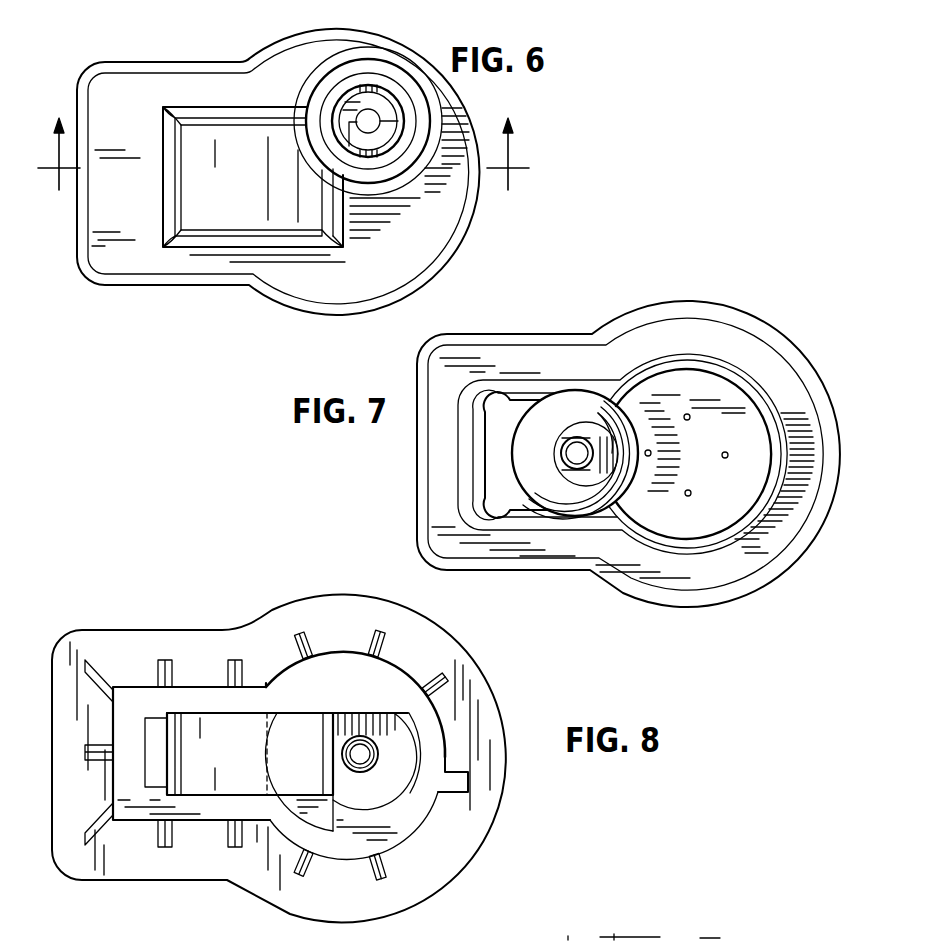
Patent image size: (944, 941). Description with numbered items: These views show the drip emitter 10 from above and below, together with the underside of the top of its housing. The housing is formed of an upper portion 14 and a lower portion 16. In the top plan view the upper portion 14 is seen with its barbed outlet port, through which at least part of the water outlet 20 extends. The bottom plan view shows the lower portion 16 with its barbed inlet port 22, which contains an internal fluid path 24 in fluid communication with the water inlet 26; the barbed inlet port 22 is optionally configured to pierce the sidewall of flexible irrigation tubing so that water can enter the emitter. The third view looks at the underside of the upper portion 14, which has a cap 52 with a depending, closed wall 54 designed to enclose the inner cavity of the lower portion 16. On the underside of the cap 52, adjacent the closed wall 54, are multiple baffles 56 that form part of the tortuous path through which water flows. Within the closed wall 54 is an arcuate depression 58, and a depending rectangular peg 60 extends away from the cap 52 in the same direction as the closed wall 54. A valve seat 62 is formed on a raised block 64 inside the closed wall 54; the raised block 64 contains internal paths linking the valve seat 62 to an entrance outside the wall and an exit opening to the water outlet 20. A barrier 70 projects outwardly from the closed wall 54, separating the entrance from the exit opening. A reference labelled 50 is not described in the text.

In FIG. 6, the drip emitter 10 is at (100, 55).
In FIG. 7, the drip emitter 10 is at (551, 303).
In FIG. 6, the upper portion 14 is at (147, 60).
In FIG. 8, the upper portion 14 is at (318, 588).
In FIG. 6, the lower portion 16 is at (281, 183).
In FIG. 7, the lower portion 16 is at (767, 318).
In FIG. 8, the lower portion 16 is at (683, 930).
In FIG. 6, the water outlet 20 is at (356, 118).
In FIG. 7, the barbed inlet port 22 is at (588, 438).
In FIG. 7, the internal fluid path 24 is at (597, 430).
In FIG. 8, the water inlet 26 is at (573, 927).
In FIG. 8, the base 50 is at (617, 926).
In FIG. 8, the cap 52 is at (435, 640).
In FIG. 8, the closed wall 54 is at (400, 832).
In FIG. 8, the baffles 56 is at (290, 643).
In FIG. 8, the arcuate depression 58 is at (212, 713).
In FIG. 8, the rectangular peg 60 is at (150, 718).
In FIG. 8, the valve seat 62 is at (440, 742).
In FIG. 8, the raised block 64 is at (400, 775).
In FIG. 8, the barrier 70 is at (462, 753).